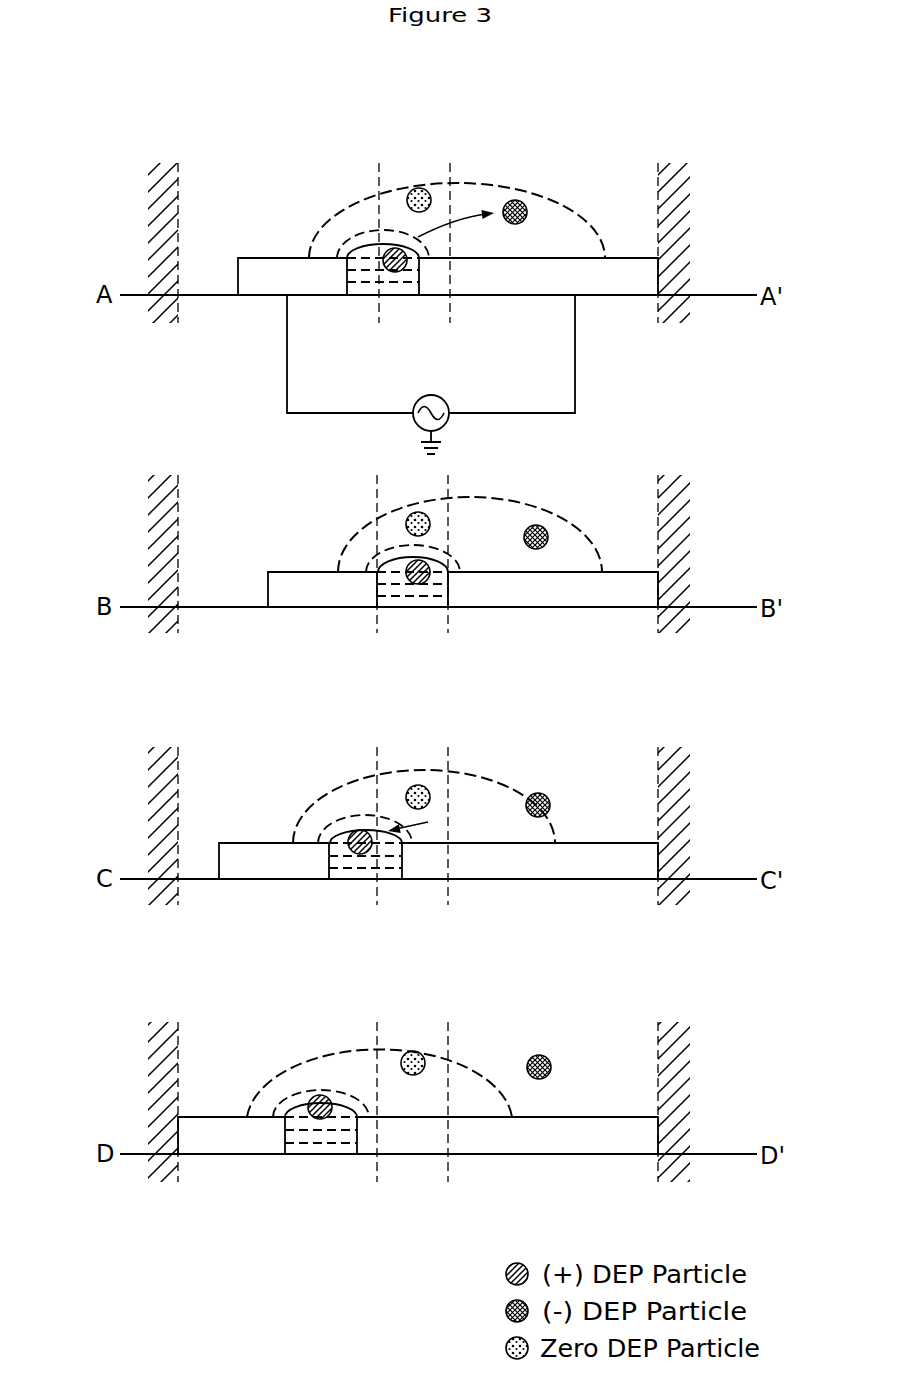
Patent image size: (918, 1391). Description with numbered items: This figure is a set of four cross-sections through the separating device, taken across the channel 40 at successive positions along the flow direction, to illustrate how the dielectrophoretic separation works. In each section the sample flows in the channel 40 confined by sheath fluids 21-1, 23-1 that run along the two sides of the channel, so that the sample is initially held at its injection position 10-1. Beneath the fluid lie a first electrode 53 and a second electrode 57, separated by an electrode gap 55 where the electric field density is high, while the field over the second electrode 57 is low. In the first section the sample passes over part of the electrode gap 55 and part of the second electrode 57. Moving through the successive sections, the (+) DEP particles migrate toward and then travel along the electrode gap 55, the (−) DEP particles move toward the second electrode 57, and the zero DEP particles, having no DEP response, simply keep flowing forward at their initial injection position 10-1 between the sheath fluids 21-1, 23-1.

The channel 40 is at (655, 89).
The sheath fluid 21-1 is at (377, 150).
The initial injection position 10-1 is at (448, 150).
The sheath fluid 23-1 is at (655, 150).
The first electrode 53 is at (282, 274).
The electrode gap 55 is at (419, 308).
The second electrode 57 is at (621, 275).